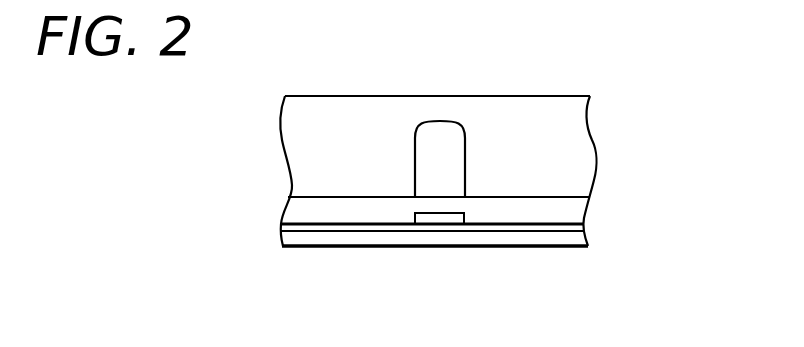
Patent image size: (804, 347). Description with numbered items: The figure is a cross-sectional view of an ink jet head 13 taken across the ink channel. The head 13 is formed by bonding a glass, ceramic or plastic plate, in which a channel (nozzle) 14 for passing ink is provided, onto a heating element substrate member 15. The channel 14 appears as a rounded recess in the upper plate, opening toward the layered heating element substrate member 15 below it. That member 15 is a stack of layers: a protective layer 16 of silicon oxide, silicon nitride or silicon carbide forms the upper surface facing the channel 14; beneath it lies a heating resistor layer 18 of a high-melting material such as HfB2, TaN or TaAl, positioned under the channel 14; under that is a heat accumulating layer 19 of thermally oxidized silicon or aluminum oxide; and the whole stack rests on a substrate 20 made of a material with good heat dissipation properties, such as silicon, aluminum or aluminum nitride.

The head 13 is at (340, 96).
The channel (nozzle) 14 is at (440, 120).
The heating element substrate member 15 is at (598, 196).
The protective layer 16 is at (365, 205).
The heating resistor layer 18 is at (442, 219).
The heat accumulating layer 19 is at (487, 226).
The substrate 20 is at (543, 237).